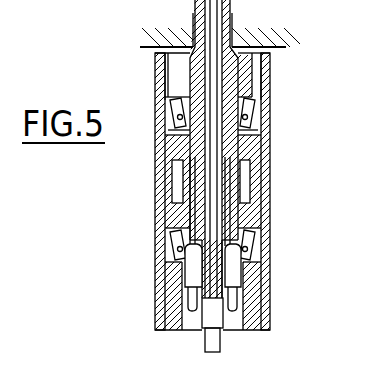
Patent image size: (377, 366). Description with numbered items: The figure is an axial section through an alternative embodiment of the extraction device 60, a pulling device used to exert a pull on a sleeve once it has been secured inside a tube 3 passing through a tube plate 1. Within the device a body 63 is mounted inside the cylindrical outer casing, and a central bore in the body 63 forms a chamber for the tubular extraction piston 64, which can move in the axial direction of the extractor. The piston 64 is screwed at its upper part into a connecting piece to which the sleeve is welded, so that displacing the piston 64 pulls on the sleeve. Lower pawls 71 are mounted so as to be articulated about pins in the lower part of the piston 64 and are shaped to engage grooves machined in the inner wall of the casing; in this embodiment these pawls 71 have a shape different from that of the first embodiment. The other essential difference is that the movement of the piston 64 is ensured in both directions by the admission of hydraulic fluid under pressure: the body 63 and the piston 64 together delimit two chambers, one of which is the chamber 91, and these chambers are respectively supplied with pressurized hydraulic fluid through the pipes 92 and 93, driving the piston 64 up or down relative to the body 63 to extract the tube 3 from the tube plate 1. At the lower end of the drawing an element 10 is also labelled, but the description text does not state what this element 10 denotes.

The tube plate 1 is at (285, 45).
The tube 3 is at (189, 72).
The extraction piston 64 is at (240, 80).
The body 63 is at (250, 132).
The extraction device 60 is at (278, 160).
The chamber 91 is at (249, 183).
The pipe 93 is at (242, 269).
The pawls 71 is at (168, 243).
The pipe 92 is at (190, 277).
The lower end piece 10 is at (210, 310).